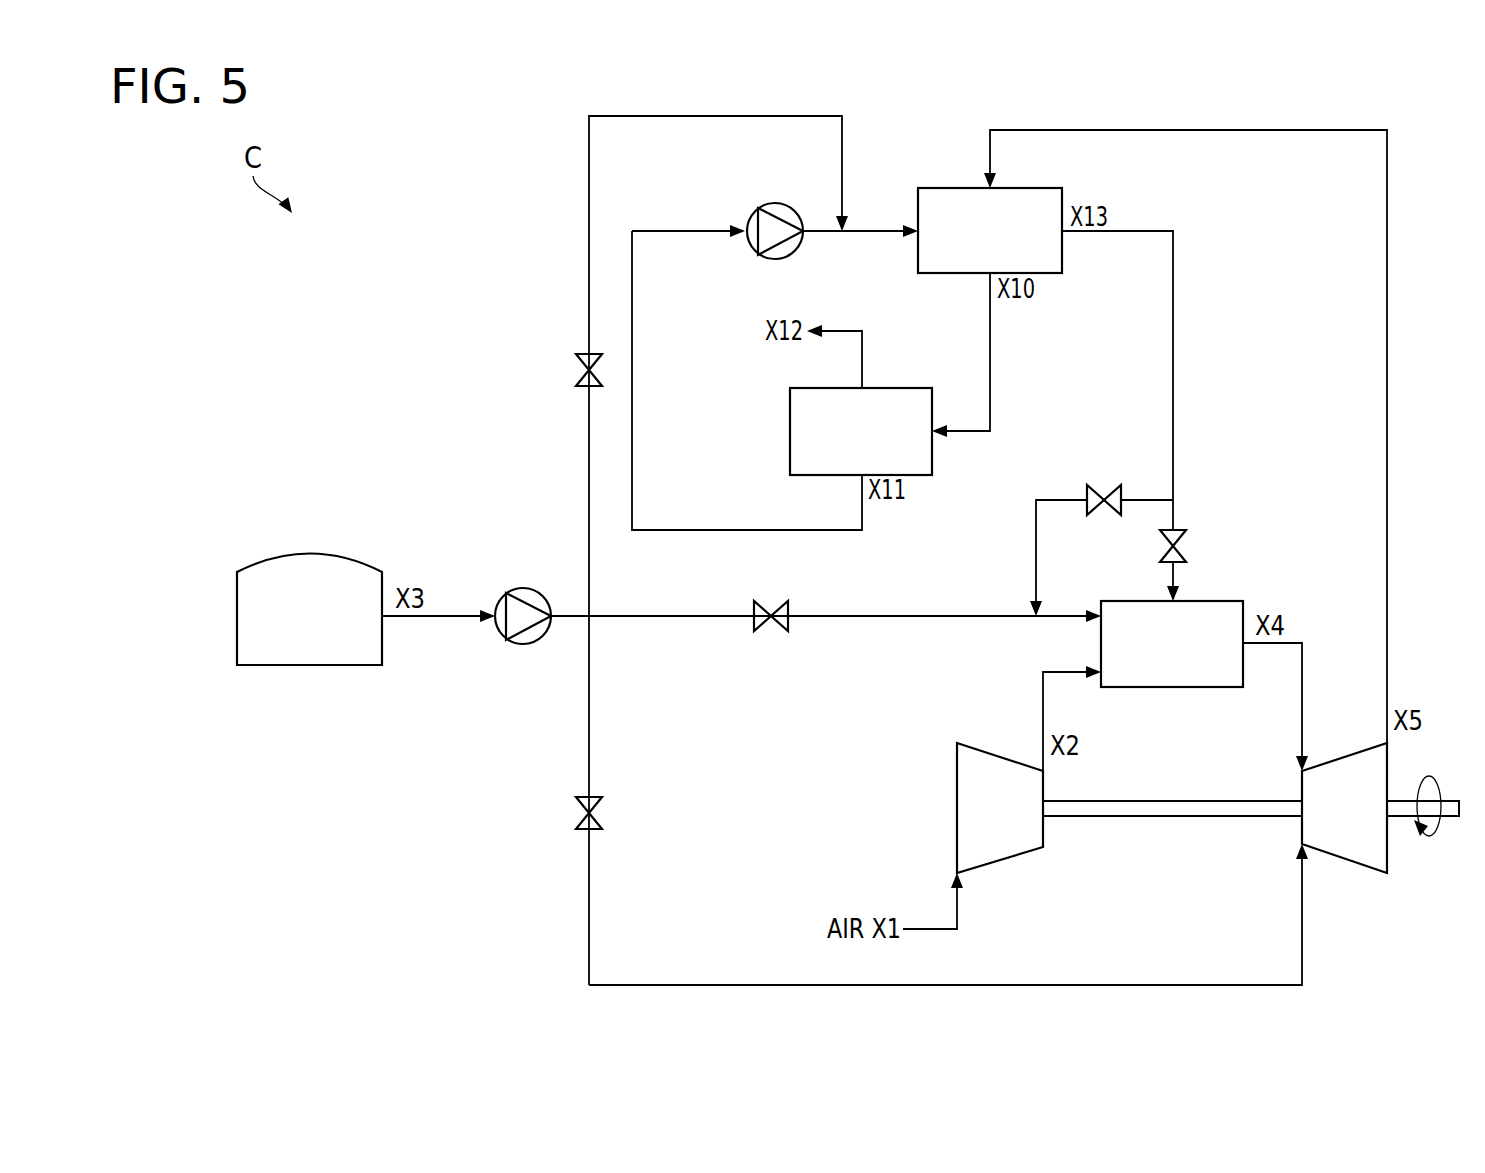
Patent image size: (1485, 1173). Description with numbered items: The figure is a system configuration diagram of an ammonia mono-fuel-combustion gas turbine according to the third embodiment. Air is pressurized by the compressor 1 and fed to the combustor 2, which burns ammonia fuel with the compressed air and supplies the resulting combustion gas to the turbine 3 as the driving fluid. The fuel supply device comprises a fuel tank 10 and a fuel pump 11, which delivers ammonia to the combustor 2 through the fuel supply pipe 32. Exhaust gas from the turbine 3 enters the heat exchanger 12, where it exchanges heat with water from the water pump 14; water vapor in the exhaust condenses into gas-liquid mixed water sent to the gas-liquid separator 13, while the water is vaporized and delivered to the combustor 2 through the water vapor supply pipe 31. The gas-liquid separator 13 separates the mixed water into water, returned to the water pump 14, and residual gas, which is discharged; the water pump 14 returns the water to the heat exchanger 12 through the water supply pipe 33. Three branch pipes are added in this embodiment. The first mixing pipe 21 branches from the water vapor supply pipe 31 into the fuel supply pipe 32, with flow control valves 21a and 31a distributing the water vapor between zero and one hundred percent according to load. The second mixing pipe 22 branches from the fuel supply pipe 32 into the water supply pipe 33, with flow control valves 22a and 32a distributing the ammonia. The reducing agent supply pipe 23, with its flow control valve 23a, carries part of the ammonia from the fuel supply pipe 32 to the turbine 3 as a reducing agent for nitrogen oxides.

The compressor 1 is at (1000, 757).
The combustor 2 is at (1230, 601).
The turbine 3 is at (1345, 757).
The fuel tank 10 is at (310, 550).
The fuel pump 11 is at (523, 588).
The heat exchanger 12 is at (955, 188).
The gas-liquid separator 13 is at (896, 388).
The water pump 14 is at (778, 205).
The first mixing pipe 21 is at (1036, 556).
The flow control valve 21a is at (1100, 487).
The second mixing pipe 22 is at (589, 263).
The flow control valve 22a is at (578, 366).
The reducing agent supply pipe 23 is at (589, 876).
The flow control valve 23a is at (578, 809).
The water vapor supply pipe 31 is at (1173, 365).
The flow control valve 31a is at (1183, 530).
The fuel supply pipe 32 is at (907, 614).
The flow control valve 32a is at (763, 603).
The water supply pipe 33 is at (866, 228).